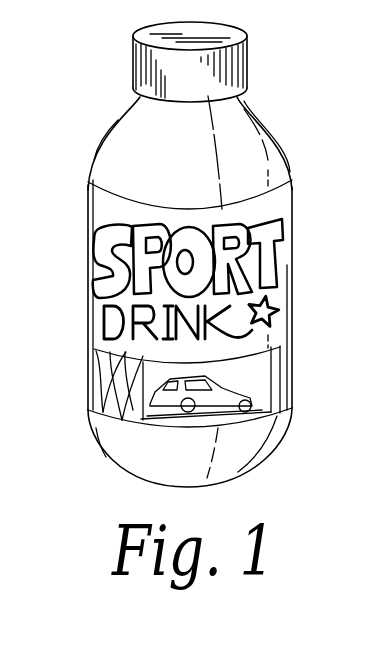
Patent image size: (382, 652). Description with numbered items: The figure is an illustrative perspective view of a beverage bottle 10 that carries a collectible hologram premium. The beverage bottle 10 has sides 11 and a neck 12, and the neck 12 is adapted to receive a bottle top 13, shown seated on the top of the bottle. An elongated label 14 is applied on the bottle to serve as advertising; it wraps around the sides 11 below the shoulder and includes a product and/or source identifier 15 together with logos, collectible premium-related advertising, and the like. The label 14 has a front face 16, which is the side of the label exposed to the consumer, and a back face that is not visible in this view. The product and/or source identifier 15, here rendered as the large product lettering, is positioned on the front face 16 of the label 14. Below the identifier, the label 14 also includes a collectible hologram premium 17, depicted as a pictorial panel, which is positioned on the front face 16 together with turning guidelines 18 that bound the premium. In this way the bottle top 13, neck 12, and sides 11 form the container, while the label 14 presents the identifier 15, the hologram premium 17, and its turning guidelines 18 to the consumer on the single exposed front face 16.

The beverage bottle 10 is at (114, 113).
The sides 11 is at (293, 232).
The neck 12 is at (242, 100).
The bottle top 13 is at (246, 38).
The elongated label 14 is at (110, 219).
The product and/or source identifier 15 is at (98, 255).
The front face 16 is at (210, 303).
The collectible hologram premium 17 is at (122, 380).
The turning guidelines 18 is at (271, 372).